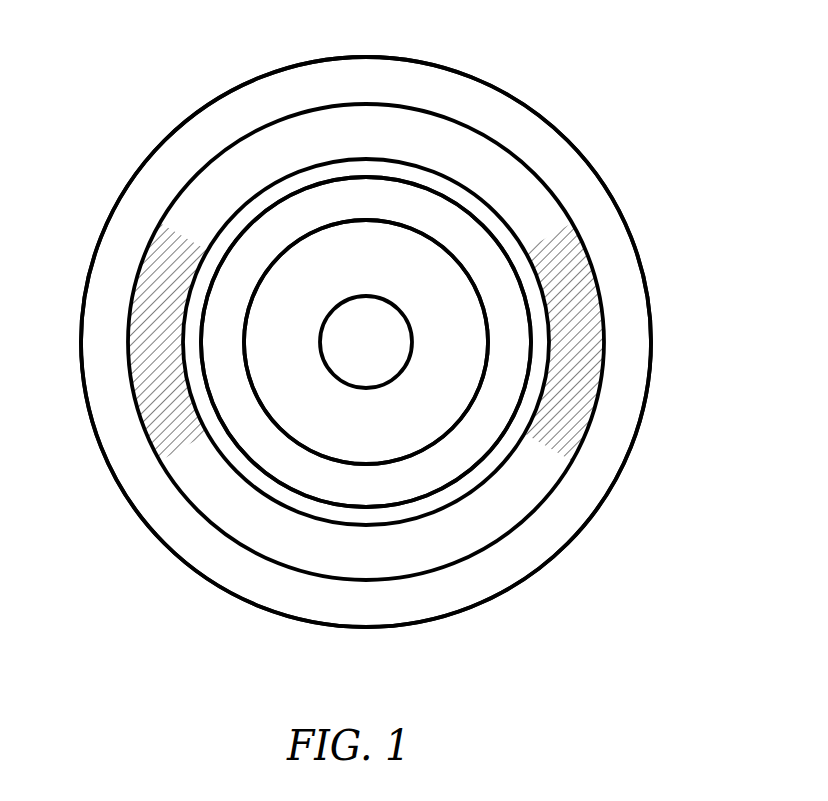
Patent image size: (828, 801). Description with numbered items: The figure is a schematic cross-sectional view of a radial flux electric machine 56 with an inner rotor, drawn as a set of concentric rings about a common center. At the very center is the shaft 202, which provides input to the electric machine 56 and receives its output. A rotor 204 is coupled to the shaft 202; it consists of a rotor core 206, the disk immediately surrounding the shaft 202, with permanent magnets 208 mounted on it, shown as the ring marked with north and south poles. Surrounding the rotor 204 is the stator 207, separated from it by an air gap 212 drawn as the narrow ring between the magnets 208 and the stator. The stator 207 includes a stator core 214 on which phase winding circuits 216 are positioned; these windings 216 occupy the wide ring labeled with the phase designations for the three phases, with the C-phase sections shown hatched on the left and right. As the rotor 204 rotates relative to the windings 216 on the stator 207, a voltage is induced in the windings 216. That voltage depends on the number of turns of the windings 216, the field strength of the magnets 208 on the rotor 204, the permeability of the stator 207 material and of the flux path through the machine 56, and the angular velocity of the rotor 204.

The electric machine 56 is at (613, 147).
The shaft 202 is at (365, 323).
The rotor 204 is at (420, 477).
The rotor core 206 is at (390, 242).
The stator 207 is at (573, 498).
The permanent magnets 208 is at (257, 247).
The air gap 212 is at (340, 163).
The stator core 214 is at (333, 600).
The phase winding circuits 216 is at (207, 490).